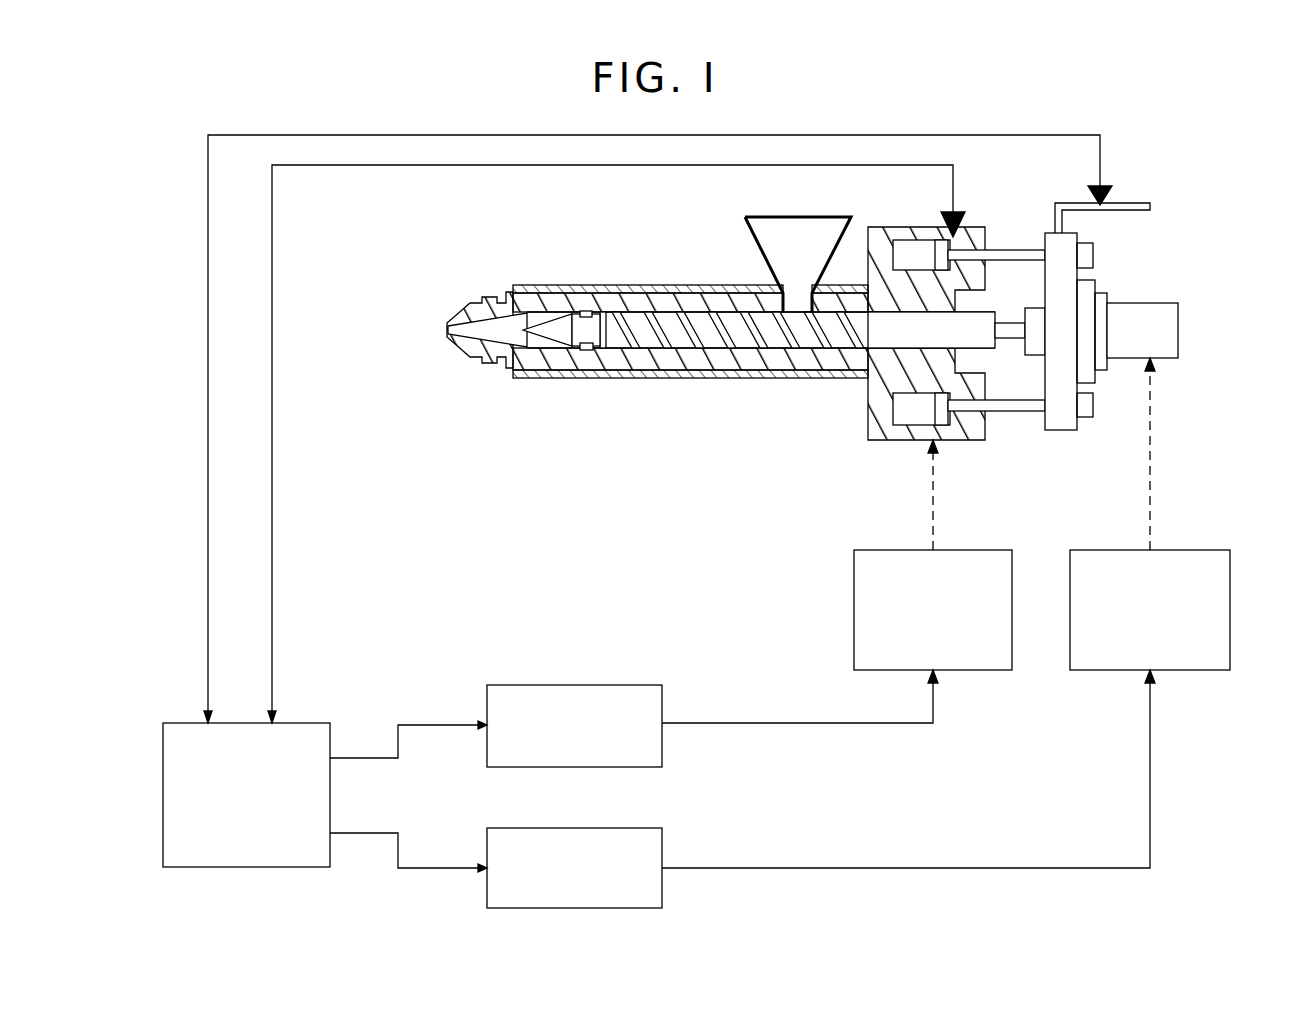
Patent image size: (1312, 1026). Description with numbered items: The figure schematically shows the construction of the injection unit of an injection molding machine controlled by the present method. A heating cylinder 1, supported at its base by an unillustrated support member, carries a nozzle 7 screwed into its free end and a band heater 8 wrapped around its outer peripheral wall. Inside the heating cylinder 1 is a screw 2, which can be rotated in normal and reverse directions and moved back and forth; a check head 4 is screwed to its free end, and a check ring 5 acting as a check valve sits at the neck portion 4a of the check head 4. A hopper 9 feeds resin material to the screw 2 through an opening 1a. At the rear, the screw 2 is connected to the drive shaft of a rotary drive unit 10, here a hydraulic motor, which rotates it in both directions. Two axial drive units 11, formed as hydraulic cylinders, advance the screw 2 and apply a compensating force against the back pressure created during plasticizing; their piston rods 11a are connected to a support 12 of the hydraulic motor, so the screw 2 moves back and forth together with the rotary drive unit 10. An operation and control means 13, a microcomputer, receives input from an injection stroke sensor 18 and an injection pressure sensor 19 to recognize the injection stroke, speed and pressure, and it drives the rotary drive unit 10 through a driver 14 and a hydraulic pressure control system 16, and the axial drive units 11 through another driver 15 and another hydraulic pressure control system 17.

The heating cylinder 1 is at (817, 361).
The opening 1a is at (800, 292).
The screw 2 is at (672, 318).
The check head 4 is at (556, 350).
The neck portion 4a is at (587, 311).
The check ring 5 is at (594, 350).
The nozzle 7 is at (447, 322).
The band heater 8 is at (482, 375).
The hopper 9 is at (758, 237).
The rotary drive unit 10 is at (1146, 304).
The axial drive units 11 is at (906, 250).
The piston rods 11a is at (1016, 250).
The support 12 is at (1069, 426).
The operation and control means 13 is at (306, 723).
The driver 14 is at (612, 829).
The driver 15 is at (602, 686).
The hydraulic pressure control system 16 is at (1231, 580).
The hydraulic pressure control system 17 is at (854, 588).
The injection stroke sensor 18 is at (1118, 189).
The injection pressure sensor 19 is at (958, 226).